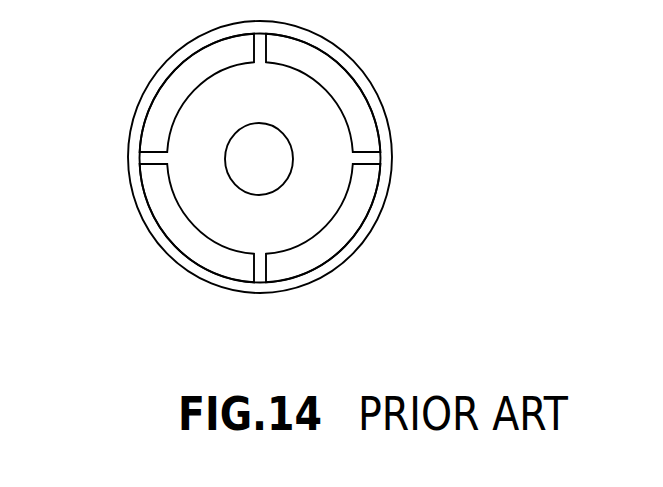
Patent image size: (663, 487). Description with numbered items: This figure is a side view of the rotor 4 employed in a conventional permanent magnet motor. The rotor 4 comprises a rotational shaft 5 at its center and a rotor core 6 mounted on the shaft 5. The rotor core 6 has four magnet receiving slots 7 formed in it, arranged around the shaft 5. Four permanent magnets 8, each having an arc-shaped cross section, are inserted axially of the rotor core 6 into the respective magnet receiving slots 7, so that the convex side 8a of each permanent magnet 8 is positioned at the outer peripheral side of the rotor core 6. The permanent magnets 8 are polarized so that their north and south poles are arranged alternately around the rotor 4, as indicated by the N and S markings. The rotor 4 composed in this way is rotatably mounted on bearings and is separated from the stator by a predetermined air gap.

The rotor 4 is at (275, 156).
The rotational shaft 5 is at (284, 167).
The rotor core 6 is at (353, 70).
The magnet receiving slots 7 is at (144, 119).
The permanent magnets 8 is at (218, 52).
The convex side 8a is at (157, 82).